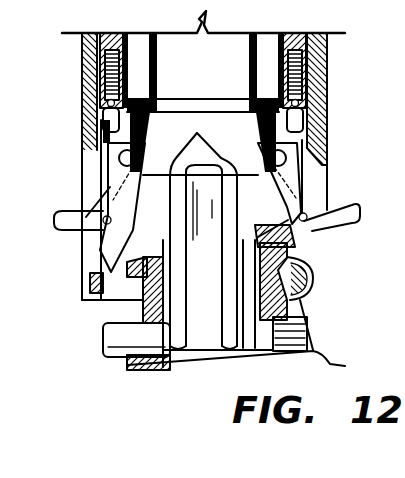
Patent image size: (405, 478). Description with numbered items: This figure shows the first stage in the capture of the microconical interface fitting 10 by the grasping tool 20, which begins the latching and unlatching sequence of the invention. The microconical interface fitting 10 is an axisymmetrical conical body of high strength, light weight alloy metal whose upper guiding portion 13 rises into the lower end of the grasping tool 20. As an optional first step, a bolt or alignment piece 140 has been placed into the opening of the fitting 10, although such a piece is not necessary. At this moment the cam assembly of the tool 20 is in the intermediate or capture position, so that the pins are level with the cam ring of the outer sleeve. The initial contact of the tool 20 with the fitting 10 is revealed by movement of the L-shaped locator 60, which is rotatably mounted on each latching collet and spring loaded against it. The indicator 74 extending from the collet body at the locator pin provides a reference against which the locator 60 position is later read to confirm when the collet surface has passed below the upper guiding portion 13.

The microconical interface fitting 10 is at (251, 309).
The upper guiding portion 13 is at (92, 291).
The grasping tool 20 is at (329, 69).
The L-shaped locator 60 is at (104, 186).
The indicator 74 is at (60, 212).
The alignment piece 140 is at (199, 128).